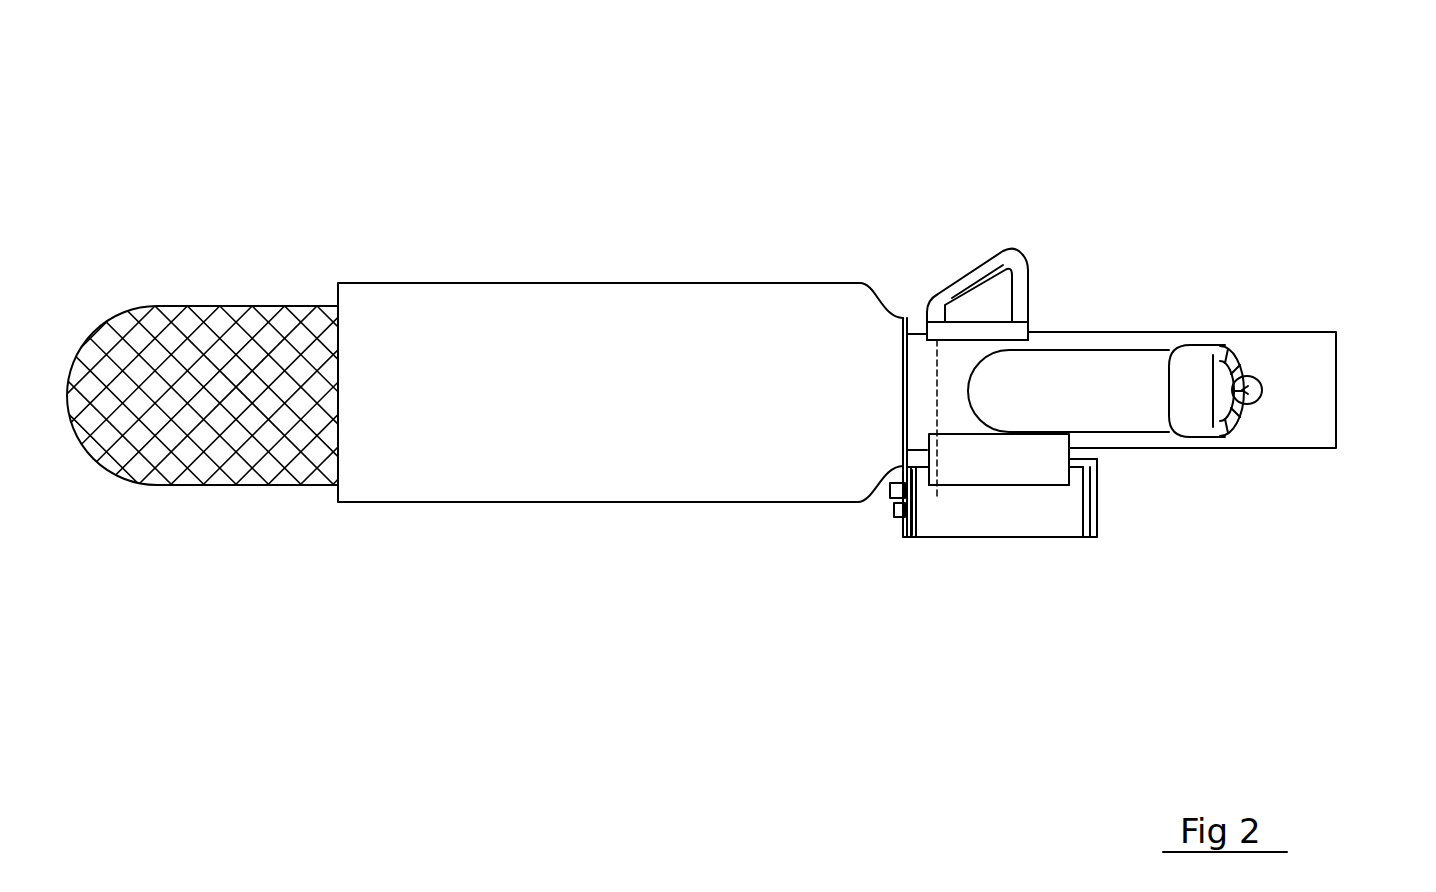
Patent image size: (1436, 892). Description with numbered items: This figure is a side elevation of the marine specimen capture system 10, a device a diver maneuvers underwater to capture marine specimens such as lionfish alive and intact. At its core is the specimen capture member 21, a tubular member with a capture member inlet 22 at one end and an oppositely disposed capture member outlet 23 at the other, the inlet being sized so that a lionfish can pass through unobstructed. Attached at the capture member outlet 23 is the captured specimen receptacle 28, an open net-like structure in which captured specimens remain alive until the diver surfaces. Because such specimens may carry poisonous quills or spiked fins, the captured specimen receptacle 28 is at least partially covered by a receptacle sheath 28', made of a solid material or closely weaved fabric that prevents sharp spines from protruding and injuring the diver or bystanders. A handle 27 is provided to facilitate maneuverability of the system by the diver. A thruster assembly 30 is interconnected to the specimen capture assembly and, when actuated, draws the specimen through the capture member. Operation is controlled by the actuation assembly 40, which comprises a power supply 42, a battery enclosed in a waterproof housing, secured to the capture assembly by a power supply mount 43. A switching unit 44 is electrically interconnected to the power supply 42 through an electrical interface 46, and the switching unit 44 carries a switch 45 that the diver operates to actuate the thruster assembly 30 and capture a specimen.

The marine specimen capture system 10 is at (1137, 108).
The specimen capture member 21 is at (1333, 397).
The capture member inlet 22 is at (1230, 385).
The capture member outlet 23 is at (904, 440).
The handle 27 is at (888, 366).
The captured specimen receptacle 28 is at (202, 332).
The receptacle sheath 28' is at (599, 340).
The thruster assembly 30 is at (1205, 325).
The actuation assembly 40 is at (1021, 560).
The power supply 42 is at (1044, 498).
The power supply mount 43 is at (1056, 461).
The switching unit 44 is at (977, 257).
The switch 45 is at (1034, 292).
The electrical interface 46 is at (936, 552).